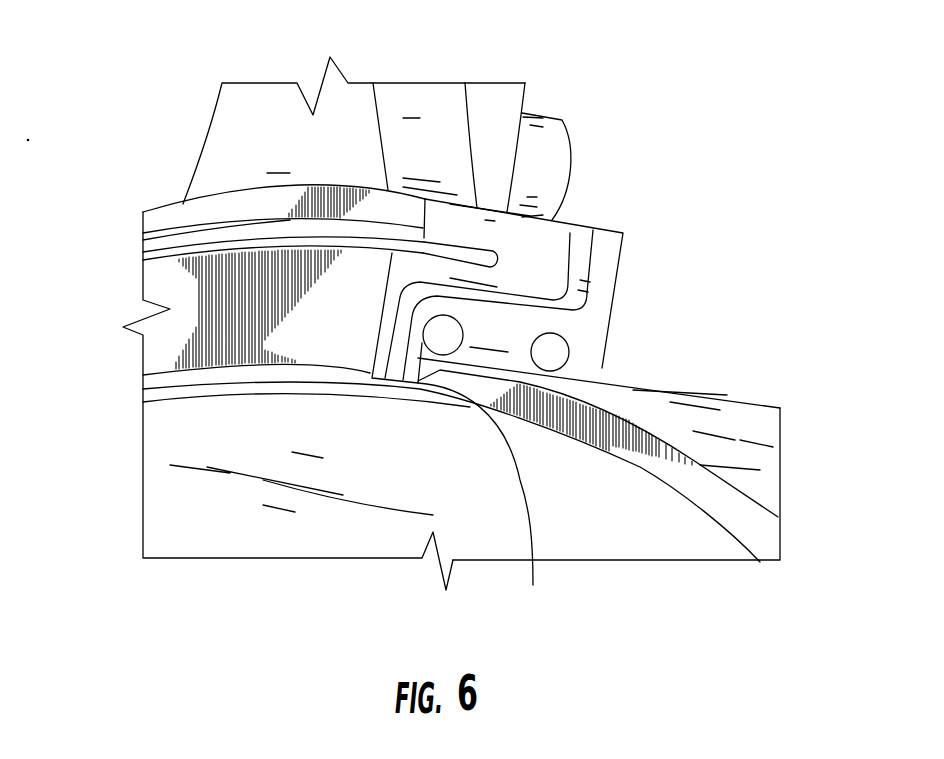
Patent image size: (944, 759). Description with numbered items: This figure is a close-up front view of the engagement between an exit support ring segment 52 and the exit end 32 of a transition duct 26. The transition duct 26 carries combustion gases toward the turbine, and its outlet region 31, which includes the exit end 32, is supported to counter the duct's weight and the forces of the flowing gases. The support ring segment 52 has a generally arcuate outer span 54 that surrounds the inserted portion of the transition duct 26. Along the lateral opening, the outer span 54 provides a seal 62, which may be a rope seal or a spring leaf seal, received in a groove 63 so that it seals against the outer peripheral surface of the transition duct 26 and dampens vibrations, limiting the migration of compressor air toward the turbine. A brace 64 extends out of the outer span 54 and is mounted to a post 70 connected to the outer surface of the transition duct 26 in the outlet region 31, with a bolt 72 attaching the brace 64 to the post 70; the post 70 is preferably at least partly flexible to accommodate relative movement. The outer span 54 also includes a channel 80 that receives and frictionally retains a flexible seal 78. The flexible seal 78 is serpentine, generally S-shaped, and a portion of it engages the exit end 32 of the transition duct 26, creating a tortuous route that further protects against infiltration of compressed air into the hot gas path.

The transition duct 26 is at (757, 471).
The outlet region 31 is at (760, 390).
The exit end 32 is at (717, 505).
The exit support ring segment 52 is at (650, 249).
The outer span 54 is at (170, 291).
The seal 62 is at (553, 352).
The groove 63 is at (597, 368).
The brace 64 is at (245, 147).
The post 70 is at (473, 110).
The bolt 72 is at (537, 148).
The flexible seal 78 is at (533, 585).
The channel 80 is at (567, 228).